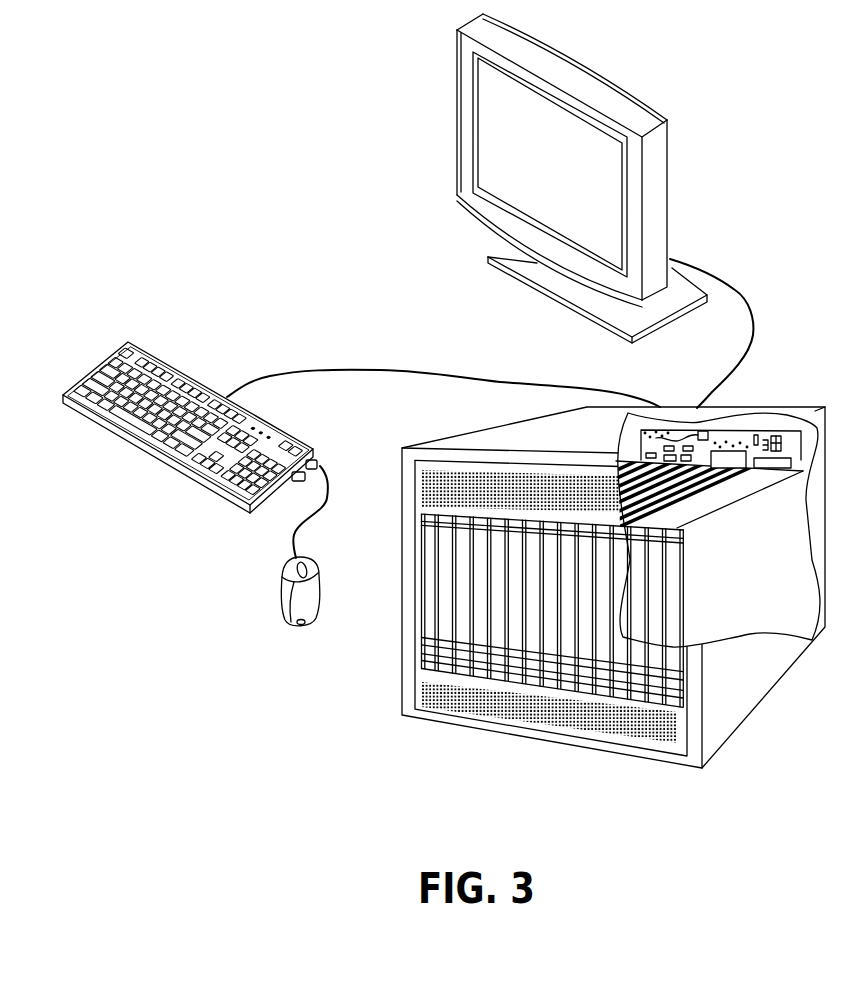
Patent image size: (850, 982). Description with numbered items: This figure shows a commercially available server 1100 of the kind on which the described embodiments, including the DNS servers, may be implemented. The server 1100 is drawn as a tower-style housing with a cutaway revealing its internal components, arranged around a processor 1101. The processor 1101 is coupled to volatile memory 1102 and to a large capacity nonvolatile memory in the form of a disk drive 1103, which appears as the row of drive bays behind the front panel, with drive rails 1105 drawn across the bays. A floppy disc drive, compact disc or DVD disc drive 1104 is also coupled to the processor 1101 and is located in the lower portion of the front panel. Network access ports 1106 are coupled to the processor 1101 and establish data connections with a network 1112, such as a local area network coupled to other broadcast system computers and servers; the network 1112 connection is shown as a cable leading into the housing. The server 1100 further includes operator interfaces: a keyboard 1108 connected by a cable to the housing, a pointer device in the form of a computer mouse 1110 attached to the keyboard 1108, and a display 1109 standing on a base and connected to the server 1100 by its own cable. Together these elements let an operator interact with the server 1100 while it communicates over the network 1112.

The server 1100 is at (593, 573).
The processor 1101 is at (643, 457).
The volatile memory 1102 is at (785, 462).
The disk drive 1103 is at (458, 562).
The disc drive 1104 is at (428, 609).
The drive rail 1105 is at (443, 585).
The network access ports 1106 is at (728, 458).
The keyboard 1108 is at (187, 374).
The display 1109 is at (670, 207).
The computer mouse 1110 is at (288, 620).
The network 1112 is at (770, 425).